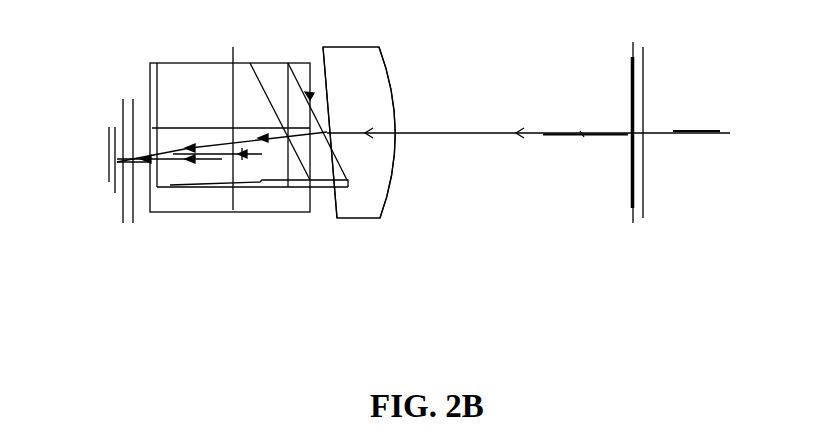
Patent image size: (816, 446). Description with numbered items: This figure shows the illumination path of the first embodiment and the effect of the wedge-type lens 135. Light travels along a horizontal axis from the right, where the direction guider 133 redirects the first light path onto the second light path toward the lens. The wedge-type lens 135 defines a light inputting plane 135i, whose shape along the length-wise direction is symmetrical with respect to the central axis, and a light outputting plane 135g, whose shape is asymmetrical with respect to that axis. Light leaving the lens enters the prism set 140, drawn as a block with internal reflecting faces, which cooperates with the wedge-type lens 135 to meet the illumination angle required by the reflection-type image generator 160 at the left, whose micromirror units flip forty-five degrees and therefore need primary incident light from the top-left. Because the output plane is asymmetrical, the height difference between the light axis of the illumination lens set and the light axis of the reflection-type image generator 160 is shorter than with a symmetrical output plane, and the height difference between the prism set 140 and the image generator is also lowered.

The direction guider 133 is at (643, 197).
The wedge-type lens 135 is at (360, 218).
The light outputting plane 135g is at (316, 66).
The light inputting plane 135i is at (388, 67).
The prism set 140 is at (209, 204).
The reflection-type image generator 160 is at (109, 184).